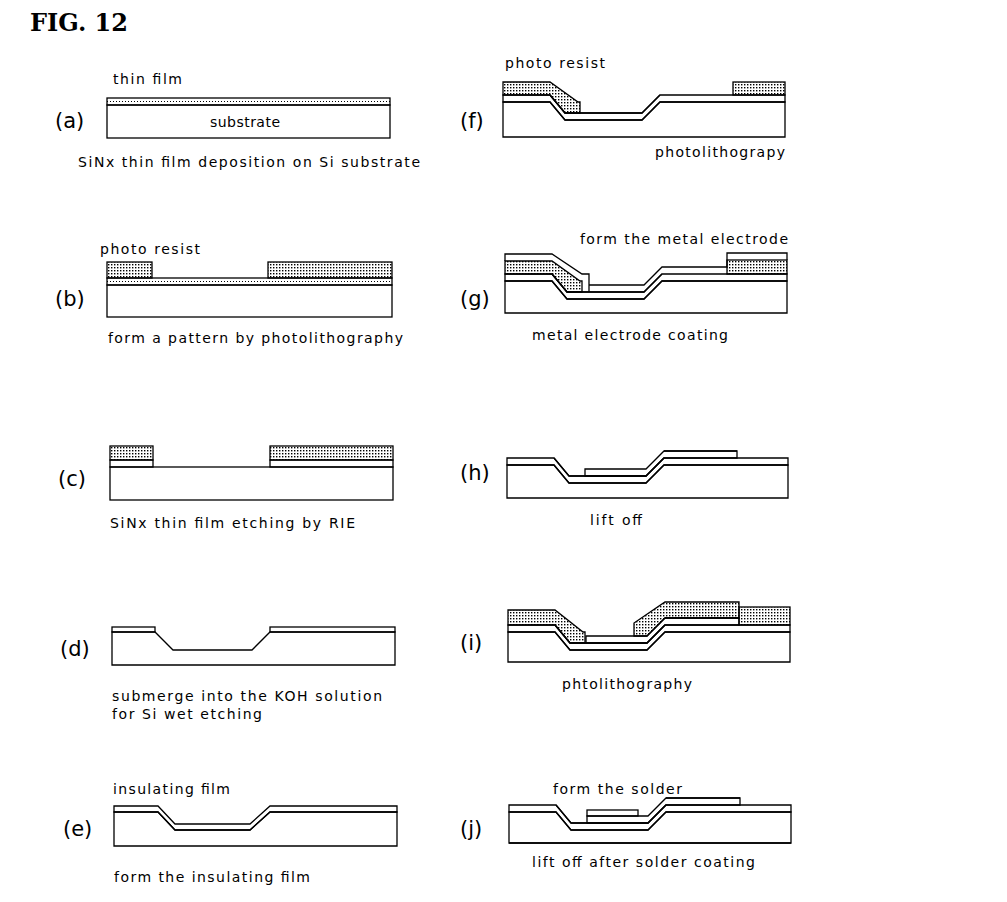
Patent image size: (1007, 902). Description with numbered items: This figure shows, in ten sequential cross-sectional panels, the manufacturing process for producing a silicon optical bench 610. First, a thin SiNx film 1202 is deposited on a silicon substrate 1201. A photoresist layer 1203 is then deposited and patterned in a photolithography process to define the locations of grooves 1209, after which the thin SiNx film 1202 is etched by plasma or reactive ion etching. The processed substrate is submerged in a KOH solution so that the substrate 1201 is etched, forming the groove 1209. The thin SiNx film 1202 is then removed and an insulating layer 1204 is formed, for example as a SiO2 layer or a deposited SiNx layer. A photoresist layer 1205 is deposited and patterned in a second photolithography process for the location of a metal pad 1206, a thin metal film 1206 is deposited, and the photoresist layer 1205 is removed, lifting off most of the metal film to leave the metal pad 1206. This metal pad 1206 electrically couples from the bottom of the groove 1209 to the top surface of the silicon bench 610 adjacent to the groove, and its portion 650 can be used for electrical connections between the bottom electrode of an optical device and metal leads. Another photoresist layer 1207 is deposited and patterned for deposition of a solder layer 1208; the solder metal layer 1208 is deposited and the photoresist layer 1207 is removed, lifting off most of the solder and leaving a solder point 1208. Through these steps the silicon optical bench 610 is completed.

The silicon substrate 1201 is at (383, 128).
The thin SiNx film 1202 is at (390, 101).
The photoresist layer 1203 is at (392, 265).
The insulating layer 1204 is at (173, 638).
The photoresist layer 1205 is at (786, 85).
The metal pad 1206 is at (787, 253).
The photoresist layer 1207 is at (790, 611).
The solder point 1208 is at (620, 808).
The groove 1209 is at (617, 96).
The portion of metal pad 650 is at (722, 450).
The silicon optical bench 610 is at (820, 750).